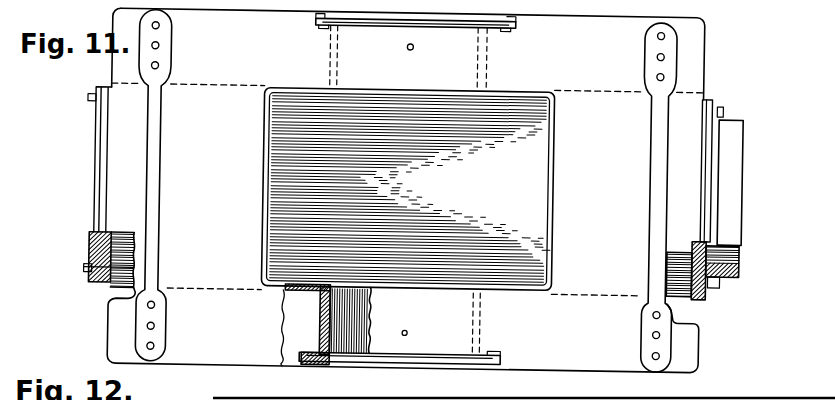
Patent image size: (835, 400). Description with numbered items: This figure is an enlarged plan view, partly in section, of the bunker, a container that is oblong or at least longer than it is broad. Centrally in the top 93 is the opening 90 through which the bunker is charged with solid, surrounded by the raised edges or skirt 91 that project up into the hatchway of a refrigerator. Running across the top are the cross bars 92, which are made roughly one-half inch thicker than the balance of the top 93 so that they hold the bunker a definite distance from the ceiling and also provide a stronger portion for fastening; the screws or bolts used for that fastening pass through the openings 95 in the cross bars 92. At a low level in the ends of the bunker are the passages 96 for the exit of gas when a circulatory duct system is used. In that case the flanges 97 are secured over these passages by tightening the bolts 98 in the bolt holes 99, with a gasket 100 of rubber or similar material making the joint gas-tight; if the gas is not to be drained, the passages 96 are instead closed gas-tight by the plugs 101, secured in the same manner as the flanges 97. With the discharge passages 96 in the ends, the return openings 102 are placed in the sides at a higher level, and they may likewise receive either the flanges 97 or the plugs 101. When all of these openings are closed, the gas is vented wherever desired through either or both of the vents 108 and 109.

The opening 90 is at (538, 160).
The raised edges or skirt 91 is at (547, 250).
The cross bars 92 is at (160, 159).
The top 93 is at (206, 352).
The openings 95 is at (158, 49).
The passages 96 is at (89, 245).
The flanges 97 is at (741, 123).
The bolts 98 is at (723, 104).
The bolt holes 99 is at (313, 355).
The gasket 100 is at (706, 96).
The plugs 101 is at (94, 164).
The return openings 102 is at (468, 22).
The vent 108 is at (410, 333).
The vent 109 is at (405, 51).